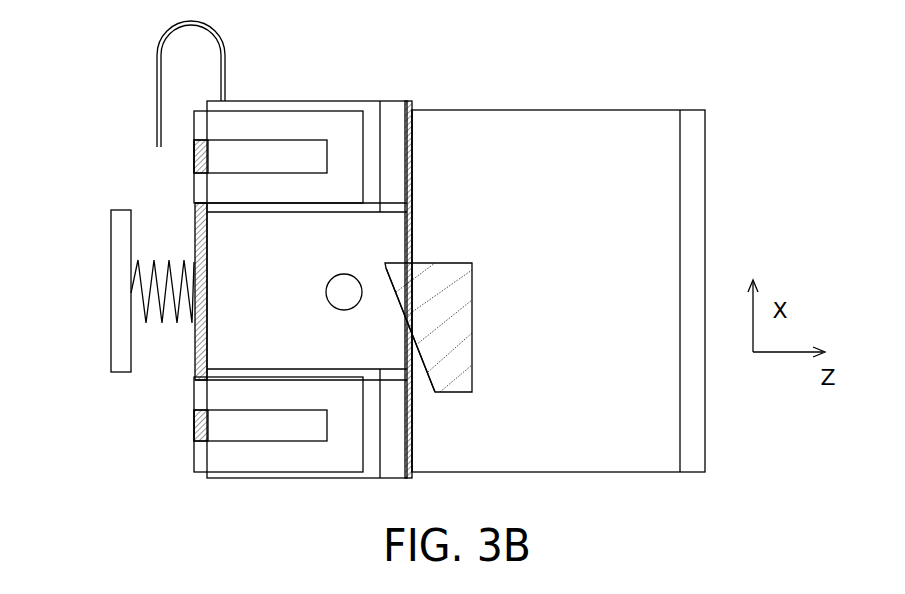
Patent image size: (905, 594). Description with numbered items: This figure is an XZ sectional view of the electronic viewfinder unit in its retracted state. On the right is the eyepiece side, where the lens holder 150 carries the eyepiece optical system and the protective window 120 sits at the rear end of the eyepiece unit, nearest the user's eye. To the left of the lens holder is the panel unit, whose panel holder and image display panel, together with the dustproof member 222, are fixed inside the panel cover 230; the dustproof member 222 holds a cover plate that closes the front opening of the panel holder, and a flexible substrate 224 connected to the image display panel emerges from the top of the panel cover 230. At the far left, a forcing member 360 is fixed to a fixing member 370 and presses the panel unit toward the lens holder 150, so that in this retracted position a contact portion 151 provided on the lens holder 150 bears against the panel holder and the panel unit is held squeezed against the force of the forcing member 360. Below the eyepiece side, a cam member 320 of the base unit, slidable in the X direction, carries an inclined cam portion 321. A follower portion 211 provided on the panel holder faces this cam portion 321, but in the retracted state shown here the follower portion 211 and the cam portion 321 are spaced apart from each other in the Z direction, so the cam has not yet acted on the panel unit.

The protective window 120 is at (695, 175).
The lens holder 150 is at (557, 138).
The contact portion 151 is at (410, 140).
The follower portion 211 is at (338, 287).
The dustproof member 222 is at (393, 110).
The flexible substrate 224 is at (228, 72).
The panel cover 230 is at (300, 125).
The cam member 320 is at (468, 343).
The cam portion 321 is at (420, 262).
The forcing member 360 is at (148, 323).
The fixing member 370 is at (117, 223).